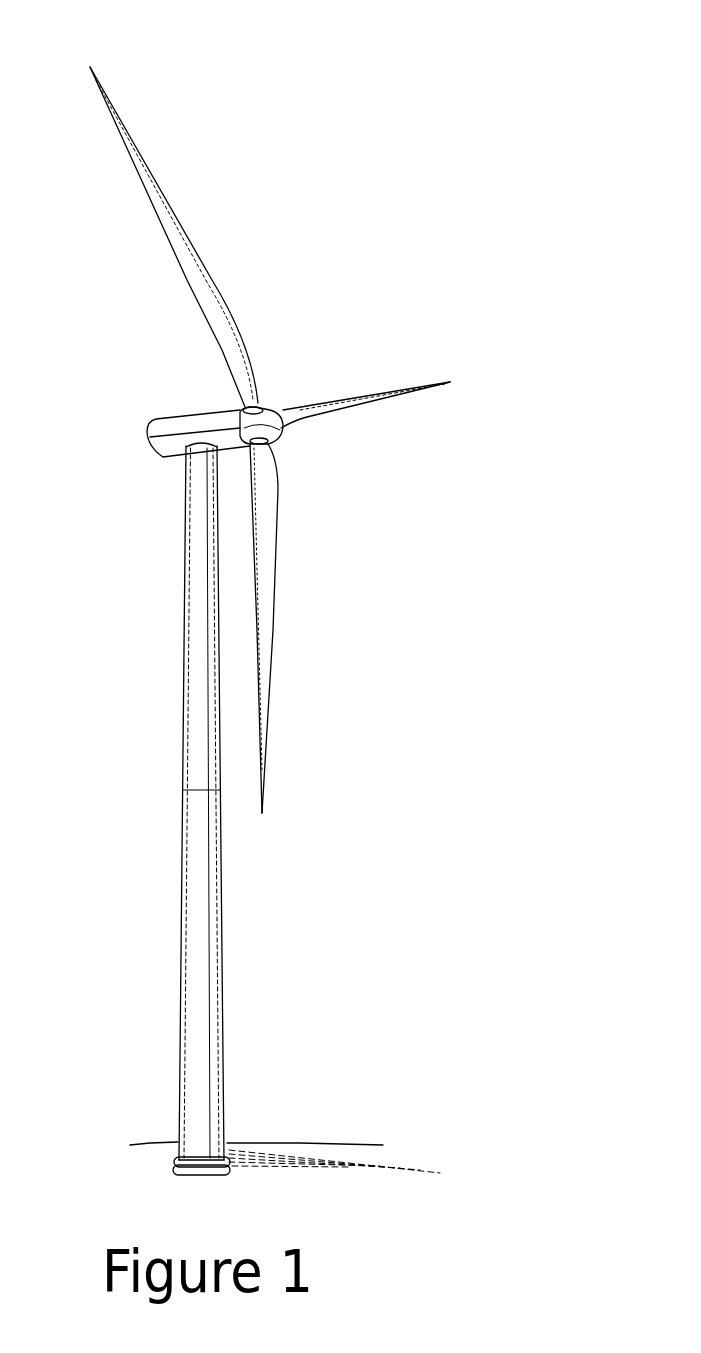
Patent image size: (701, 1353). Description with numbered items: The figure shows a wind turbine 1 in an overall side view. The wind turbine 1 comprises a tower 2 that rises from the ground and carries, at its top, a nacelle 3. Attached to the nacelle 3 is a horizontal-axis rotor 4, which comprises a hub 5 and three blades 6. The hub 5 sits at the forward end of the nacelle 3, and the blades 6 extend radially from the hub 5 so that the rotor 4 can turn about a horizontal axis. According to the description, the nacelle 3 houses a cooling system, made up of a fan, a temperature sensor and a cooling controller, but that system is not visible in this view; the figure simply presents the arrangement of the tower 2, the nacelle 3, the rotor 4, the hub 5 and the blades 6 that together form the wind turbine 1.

The wind turbine 1 is at (407, 237).
The tower 2 is at (198, 653).
The nacelle 3 is at (163, 425).
The horizontal-axis rotor 4 is at (292, 444).
The hub 5 is at (273, 412).
The blades 6 is at (176, 242).